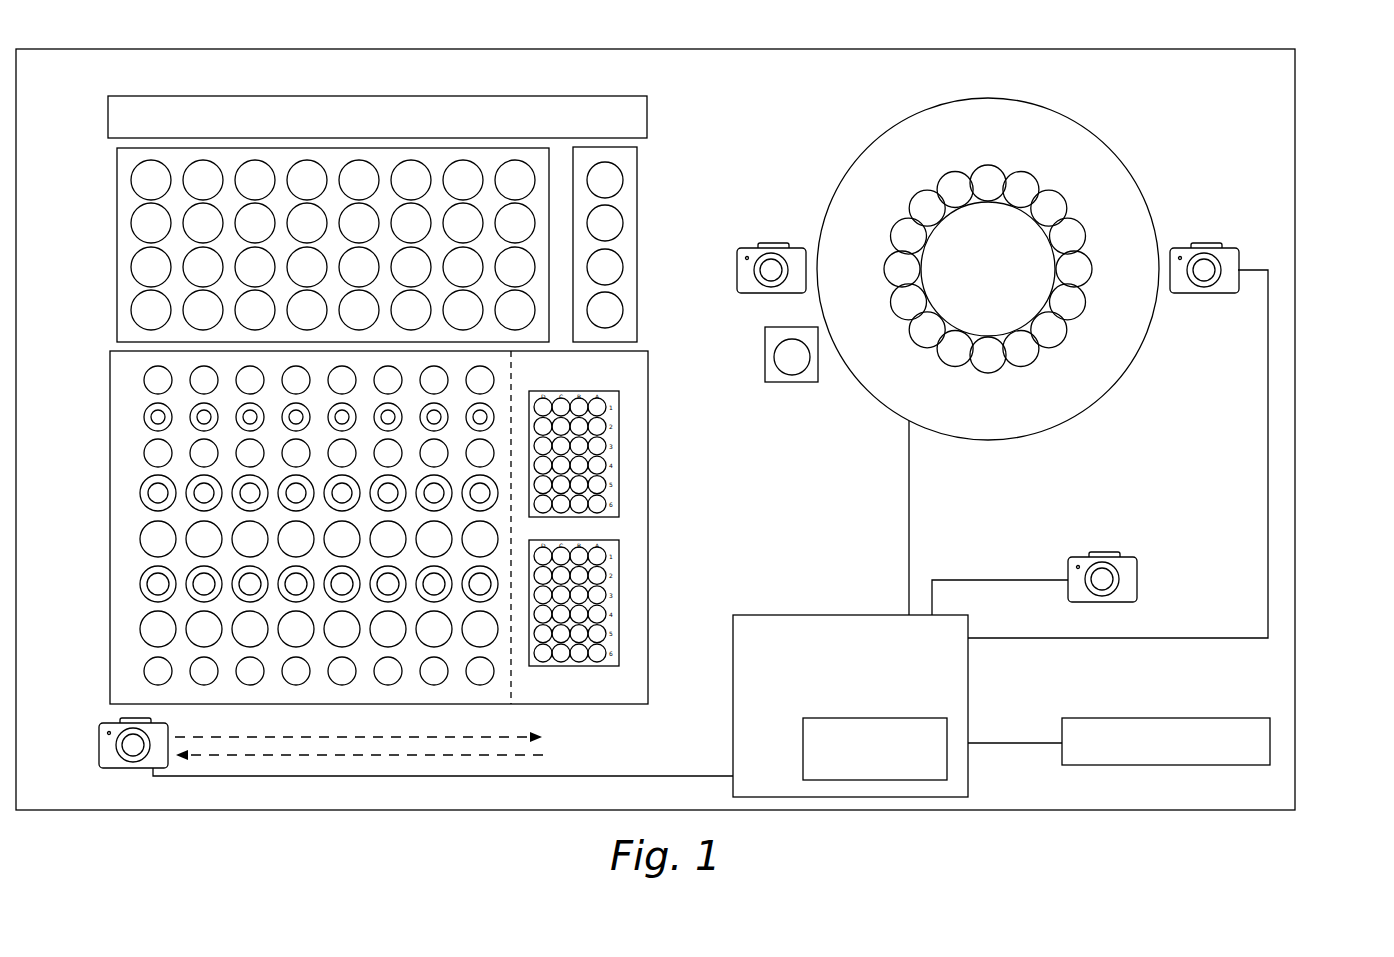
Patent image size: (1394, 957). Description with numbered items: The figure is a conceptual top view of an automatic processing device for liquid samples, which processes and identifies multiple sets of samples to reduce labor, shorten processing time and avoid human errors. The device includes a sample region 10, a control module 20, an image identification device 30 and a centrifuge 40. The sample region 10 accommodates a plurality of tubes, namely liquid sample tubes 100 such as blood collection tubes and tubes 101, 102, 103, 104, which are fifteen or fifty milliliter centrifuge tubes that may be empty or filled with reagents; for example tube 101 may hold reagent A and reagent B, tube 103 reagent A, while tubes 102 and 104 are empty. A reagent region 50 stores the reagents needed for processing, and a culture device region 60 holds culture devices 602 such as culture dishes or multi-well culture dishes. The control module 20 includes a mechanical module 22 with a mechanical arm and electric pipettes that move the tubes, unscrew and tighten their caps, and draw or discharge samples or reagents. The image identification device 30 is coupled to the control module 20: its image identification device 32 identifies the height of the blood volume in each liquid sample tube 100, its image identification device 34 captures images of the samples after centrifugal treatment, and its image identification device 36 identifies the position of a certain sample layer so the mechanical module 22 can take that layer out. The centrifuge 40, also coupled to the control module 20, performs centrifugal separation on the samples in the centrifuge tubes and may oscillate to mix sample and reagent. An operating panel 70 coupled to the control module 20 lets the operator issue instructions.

The sample region 10 is at (110, 355).
The liquid sample tube 100 is at (144, 671).
The tube 101 is at (140, 629).
The tube 102 is at (140, 539).
The tube 103 is at (144, 453).
The tube 104 is at (144, 380).
The control module 20 is at (803, 615).
The mechanical module 22 is at (901, 718).
The image identification device 30 is at (1345, 190).
The image identification device 32 is at (99, 745).
The image identification device 34 is at (1203, 243).
The image identification device 36 is at (1101, 552).
The centrifuge 40 is at (1137, 360).
The reagent region 50 is at (637, 200).
The culture device region 60 is at (648, 500).
The culture device 602 is at (619, 455).
The operating panel 70 is at (1161, 718).